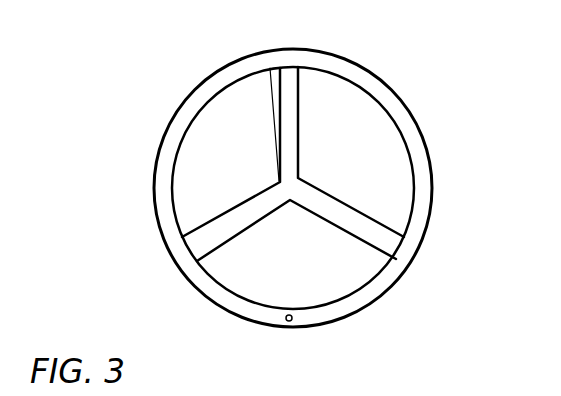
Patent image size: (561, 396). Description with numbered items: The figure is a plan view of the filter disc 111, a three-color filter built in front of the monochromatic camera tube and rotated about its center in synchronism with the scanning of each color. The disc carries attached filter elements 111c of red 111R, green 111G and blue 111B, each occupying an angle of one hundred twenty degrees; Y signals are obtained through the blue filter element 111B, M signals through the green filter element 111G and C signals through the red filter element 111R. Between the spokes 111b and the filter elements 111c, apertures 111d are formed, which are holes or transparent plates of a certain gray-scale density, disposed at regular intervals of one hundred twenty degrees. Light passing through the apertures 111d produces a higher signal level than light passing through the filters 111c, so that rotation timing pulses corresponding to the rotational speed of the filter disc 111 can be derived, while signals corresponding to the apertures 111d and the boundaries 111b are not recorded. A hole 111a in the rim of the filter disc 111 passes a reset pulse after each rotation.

The filter disc 111 is at (433, 134).
The hole 111a is at (287, 322).
The spokes 111b is at (201, 238).
The filter elements 111c is at (184, 188).
The apertures 111d is at (274, 89).
The blue filter element 111B is at (202, 148).
The red filter element 111R is at (362, 114).
The green filter element 111G is at (342, 267).